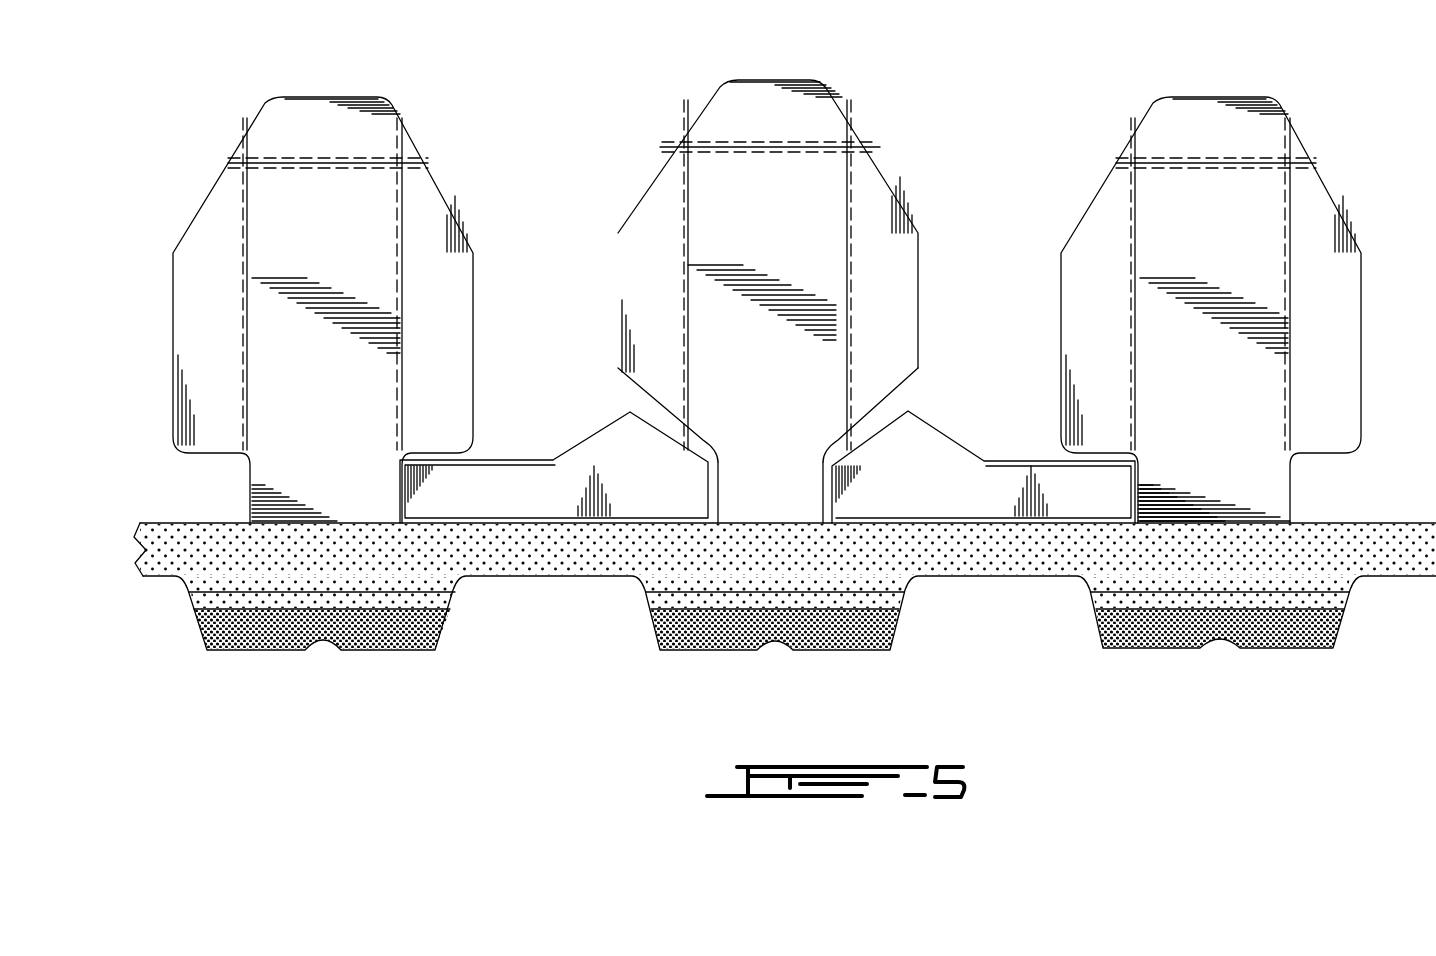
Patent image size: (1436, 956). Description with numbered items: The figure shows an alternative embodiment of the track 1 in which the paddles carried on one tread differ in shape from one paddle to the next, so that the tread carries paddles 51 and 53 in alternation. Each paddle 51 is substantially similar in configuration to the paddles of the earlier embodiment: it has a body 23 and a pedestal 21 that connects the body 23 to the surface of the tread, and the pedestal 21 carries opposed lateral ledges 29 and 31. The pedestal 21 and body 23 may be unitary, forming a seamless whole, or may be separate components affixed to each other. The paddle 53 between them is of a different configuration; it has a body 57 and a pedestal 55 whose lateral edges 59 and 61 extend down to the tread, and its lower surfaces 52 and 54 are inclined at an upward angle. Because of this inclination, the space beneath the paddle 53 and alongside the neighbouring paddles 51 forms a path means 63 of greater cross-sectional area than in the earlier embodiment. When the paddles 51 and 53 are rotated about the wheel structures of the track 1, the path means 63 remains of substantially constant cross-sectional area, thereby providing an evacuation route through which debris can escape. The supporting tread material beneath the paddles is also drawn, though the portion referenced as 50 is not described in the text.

The track 1 is at (1337, 103).
The pedestal 21 is at (330, 487).
The body 23 is at (767, 272).
The lateral ledge 29 is at (1138, 490).
The lateral ledge 31 is at (400, 495).
The printed circuit board 50 is at (785, 567).
The paddle 51 is at (335, 118).
The lower surface 52 is at (650, 395).
The paddle 53 is at (780, 102).
The lower surface 54 is at (885, 395).
The pedestal 55 is at (776, 487).
The body 57 is at (768, 263).
The lateral edge 59 is at (718, 493).
The lateral edge 61 is at (823, 493).
The path means 63 is at (845, 516).